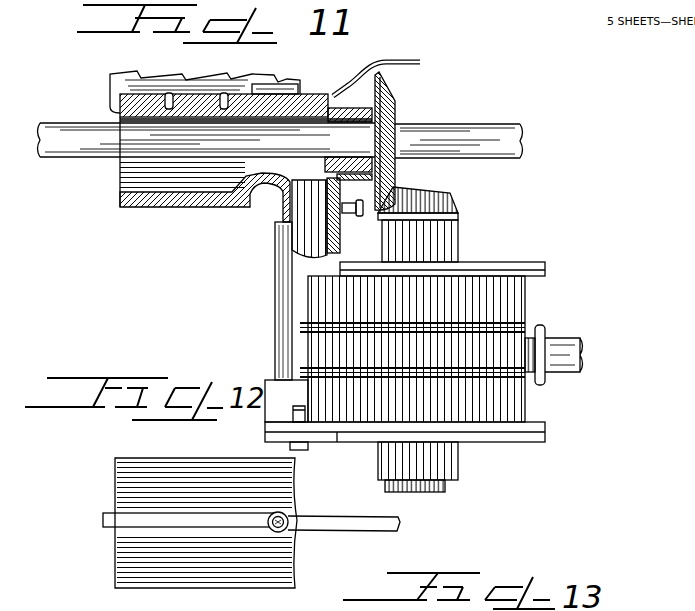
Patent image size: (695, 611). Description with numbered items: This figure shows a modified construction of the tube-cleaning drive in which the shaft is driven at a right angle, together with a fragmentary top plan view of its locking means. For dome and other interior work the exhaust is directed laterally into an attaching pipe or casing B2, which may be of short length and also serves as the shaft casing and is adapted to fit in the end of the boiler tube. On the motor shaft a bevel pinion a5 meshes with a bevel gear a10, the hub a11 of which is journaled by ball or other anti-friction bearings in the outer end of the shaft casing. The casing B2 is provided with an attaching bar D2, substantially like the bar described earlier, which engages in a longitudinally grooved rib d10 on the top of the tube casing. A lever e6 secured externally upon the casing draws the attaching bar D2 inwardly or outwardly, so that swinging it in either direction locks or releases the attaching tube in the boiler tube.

In FIG. 11, the attaching bar D2 is at (262, 82).
In FIG. 11, the hub a11 is at (337, 118).
In FIG. 11, the lever e6 is at (418, 60).
In FIG. 12, the lever e6 is at (338, 523).
In FIG. 11, the bevel gear a10 is at (395, 110).
In FIG. 11, the bevel pinion a5 is at (578, 175).
In FIG. 11, the attaching pipe or casing B2 is at (226, 178).
In FIG. 12, the longitudinally grooved rib d10 is at (131, 508).